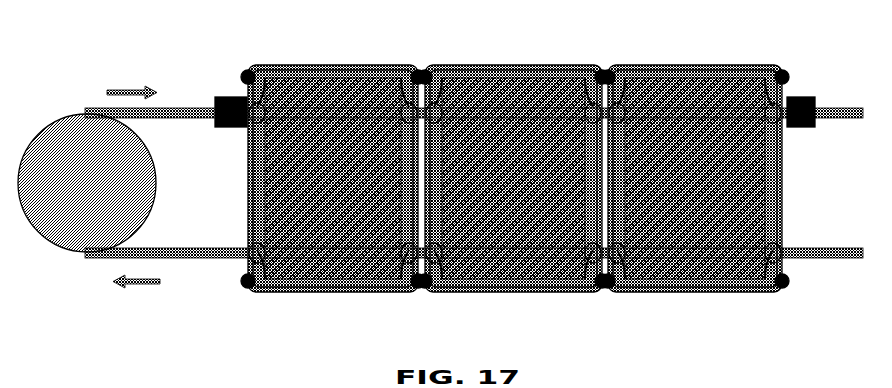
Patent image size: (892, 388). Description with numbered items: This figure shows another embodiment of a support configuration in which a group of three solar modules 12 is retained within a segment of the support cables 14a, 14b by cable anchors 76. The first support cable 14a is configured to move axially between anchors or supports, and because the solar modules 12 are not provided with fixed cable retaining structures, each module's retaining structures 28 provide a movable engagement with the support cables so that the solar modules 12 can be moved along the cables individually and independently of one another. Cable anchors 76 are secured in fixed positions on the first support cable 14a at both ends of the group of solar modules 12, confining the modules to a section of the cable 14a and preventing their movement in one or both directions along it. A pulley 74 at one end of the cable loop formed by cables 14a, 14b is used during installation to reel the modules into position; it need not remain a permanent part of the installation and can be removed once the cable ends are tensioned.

The solar module 12 is at (348, 58).
The rollers 28 is at (398, 243).
The drum 74 is at (67, 113).
The cable anchor 76 is at (225, 97).
The first support cable 14a is at (841, 118).
The lower belt 14b is at (850, 258).